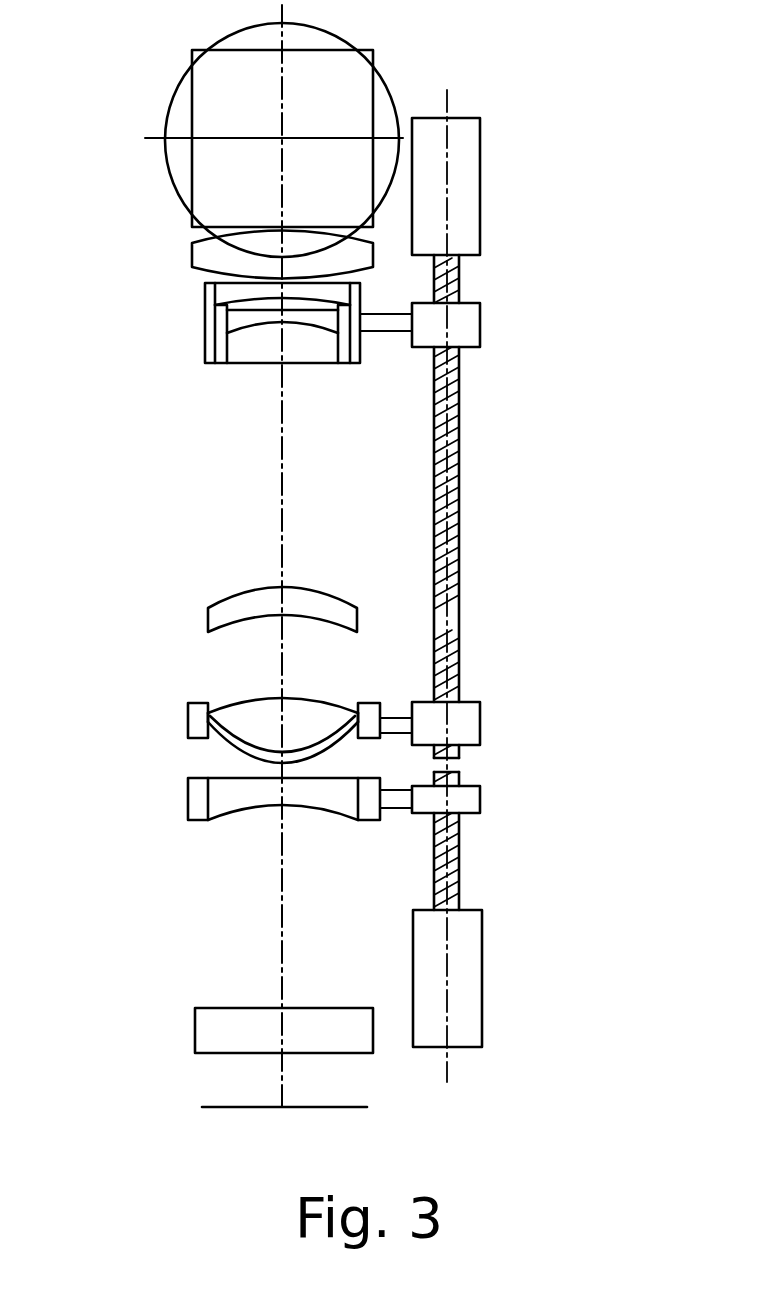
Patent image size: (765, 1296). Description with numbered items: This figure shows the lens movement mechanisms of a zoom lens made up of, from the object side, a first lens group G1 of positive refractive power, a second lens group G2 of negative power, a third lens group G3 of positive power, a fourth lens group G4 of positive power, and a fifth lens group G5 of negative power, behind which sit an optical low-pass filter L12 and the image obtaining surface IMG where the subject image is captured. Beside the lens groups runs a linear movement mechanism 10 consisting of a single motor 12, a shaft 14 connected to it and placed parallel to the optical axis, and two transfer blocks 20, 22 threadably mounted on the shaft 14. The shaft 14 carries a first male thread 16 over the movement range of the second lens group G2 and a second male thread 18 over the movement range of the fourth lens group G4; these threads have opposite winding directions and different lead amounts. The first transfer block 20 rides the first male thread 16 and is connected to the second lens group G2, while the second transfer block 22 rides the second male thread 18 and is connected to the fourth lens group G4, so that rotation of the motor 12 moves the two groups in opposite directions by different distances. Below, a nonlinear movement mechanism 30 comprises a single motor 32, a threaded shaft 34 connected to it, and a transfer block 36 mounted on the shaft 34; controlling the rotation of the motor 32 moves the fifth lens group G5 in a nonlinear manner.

The linear movement mechanism 10 is at (541, 417).
The motor 12 is at (480, 170).
The shaft 14 is at (462, 620).
The first male thread 16 is at (435, 478).
The second male thread 18 is at (462, 658).
The first transfer block 20 is at (480, 312).
The second transfer block 22 is at (480, 720).
The nonlinear movement mechanism 30 is at (561, 855).
The motor 32 is at (482, 970).
The shaft 34 is at (462, 888).
The transfer block 36 is at (480, 796).
The first lens group G1 is at (230, 151).
The second lens group G2 is at (235, 324).
The third lens group G3 is at (207, 610).
The fourth lens group G4 is at (235, 727).
The fifth lens group G5 is at (235, 798).
The optical low-pass filter L12 is at (195, 1033).
The image obtaining surface IMG is at (210, 1107).